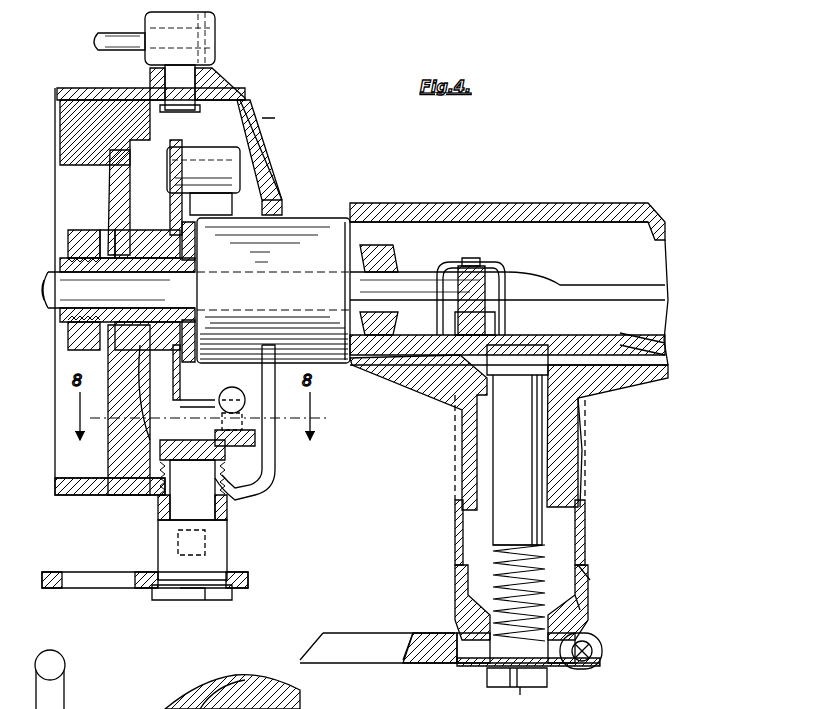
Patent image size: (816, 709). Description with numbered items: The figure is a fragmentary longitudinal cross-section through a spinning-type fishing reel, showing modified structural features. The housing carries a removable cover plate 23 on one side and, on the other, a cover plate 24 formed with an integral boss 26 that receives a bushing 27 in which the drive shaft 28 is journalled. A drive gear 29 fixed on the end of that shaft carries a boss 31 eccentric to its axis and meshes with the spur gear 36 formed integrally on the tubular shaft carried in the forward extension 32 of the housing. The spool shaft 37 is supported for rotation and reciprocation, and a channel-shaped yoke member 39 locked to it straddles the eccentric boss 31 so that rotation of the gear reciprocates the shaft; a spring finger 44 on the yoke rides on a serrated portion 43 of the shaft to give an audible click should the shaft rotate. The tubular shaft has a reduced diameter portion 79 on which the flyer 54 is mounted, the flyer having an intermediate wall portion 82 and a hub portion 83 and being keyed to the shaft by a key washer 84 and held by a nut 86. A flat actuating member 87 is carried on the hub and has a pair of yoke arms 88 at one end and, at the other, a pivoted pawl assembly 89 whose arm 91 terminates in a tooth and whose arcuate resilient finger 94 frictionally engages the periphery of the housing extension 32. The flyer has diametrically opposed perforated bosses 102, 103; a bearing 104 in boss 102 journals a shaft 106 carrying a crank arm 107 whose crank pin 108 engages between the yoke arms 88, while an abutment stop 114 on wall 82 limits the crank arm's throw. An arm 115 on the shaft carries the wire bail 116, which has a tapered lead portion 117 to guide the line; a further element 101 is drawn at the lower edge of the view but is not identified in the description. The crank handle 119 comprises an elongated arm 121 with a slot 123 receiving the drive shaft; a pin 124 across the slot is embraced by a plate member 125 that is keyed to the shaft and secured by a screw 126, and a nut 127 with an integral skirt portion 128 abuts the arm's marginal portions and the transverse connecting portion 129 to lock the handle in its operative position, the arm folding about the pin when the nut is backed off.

The cover plate 23 is at (565, 205).
The cover plate 24 is at (412, 392).
The boss 26 is at (525, 425).
The bushing 27 is at (550, 466).
The drive shaft 28 is at (578, 416).
The drive gear 29 is at (655, 338).
The boss 31 is at (500, 332).
The forward extension 32 is at (318, 218).
The spur gear 36 is at (390, 258).
The spool shaft 37 is at (535, 280).
The yoke member 39 is at (508, 268).
The serrated portion 43 is at (465, 265).
The spring finger 44 is at (473, 258).
The flyer 54 is at (243, 78).
The reduced diameter portion 79 is at (68, 320).
The intermediate wall portion 82 is at (122, 188).
The hub portion 83 is at (165, 238).
The key washer 84 is at (105, 232).
The nut 86 is at (75, 246).
The actuating member 87 is at (178, 378).
The yoke arms 88 is at (258, 432).
The pawl assembly 89 is at (226, 142).
The arm 91 is at (214, 200).
The resilient finger 94 is at (240, 207).
The lump 101 is at (172, 695).
The perforated boss 102 is at (262, 472).
The perforated boss 103 is at (208, 88).
The bearing 104 is at (238, 500).
The shaft 106 is at (182, 496).
The crank arm 107 is at (200, 414).
The crank pin 108 is at (224, 398).
The abutment stop 114 is at (110, 450).
The arm 115 is at (92, 575).
The bail 116 is at (110, 33).
The tapered lead portion 117 is at (65, 683).
The crank handle 119 is at (348, 628).
The elongated arm 121 is at (450, 595).
The slot 123 is at (465, 630).
The pin 124 is at (604, 656).
The plate member 125 is at (575, 670).
The screw 126 is at (540, 688).
The nut 127 is at (585, 592).
The skirt portion 128 is at (590, 535).
The transverse connecting portion 129 is at (580, 618).